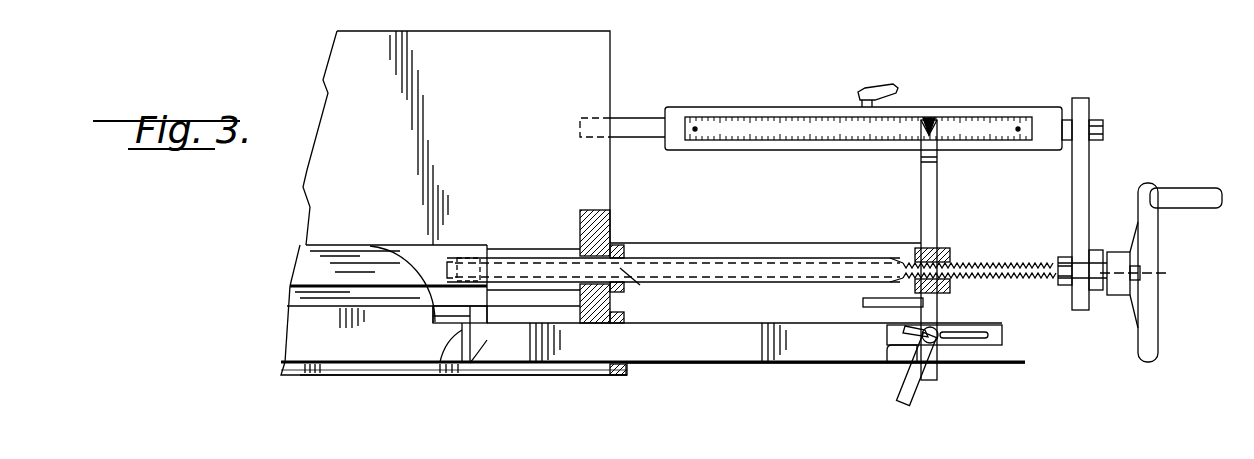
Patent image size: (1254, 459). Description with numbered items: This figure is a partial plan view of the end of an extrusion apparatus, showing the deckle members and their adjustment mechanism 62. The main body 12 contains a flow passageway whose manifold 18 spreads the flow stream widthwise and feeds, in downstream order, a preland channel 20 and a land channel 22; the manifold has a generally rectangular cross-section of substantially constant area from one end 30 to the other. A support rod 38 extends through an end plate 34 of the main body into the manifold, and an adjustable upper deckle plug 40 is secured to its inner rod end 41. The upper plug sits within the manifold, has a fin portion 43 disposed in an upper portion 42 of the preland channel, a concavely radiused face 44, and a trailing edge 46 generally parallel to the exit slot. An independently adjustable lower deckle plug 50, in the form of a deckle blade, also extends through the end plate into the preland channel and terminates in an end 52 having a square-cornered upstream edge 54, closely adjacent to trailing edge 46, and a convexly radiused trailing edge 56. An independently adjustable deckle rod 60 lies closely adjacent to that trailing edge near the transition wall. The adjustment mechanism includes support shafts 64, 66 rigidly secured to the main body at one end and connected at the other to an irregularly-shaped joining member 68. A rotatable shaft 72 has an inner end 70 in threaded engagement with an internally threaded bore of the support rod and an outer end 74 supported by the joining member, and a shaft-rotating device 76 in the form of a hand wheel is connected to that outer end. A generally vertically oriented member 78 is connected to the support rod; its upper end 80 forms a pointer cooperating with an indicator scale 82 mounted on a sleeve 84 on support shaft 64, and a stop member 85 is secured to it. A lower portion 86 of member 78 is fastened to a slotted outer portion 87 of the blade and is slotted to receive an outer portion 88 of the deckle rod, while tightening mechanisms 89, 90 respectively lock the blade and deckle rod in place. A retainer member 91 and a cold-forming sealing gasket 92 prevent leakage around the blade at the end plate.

The main body 12 is at (620, 48).
The manifold 18 is at (300, 258).
The preland channel 20 is at (290, 320).
The land channel 22 is at (290, 373).
The manifold end 30 is at (568, 308).
The end plate 34 is at (592, 210).
The support rod 38 is at (525, 258).
The upper deckle plug 40 is at (411, 244).
The inner rod end 41 is at (465, 257).
The upper portion of preland channel 42 is at (525, 308).
The fin portion 43 is at (430, 314).
The concavely radiused face 44 is at (405, 277).
The trailing edge 46 is at (437, 322).
The lower deckle plug 50 is at (530, 368).
The blade end 52 is at (445, 365).
The upstream edge 54 is at (472, 320).
The trailing edge 56 is at (478, 372).
The deckle rod 60 is at (697, 365).
The adjustment mechanism 62 is at (1156, 241).
The support shaft 64 is at (628, 128).
The support shaft 66 is at (790, 243).
The joining member 68 is at (1072, 171).
The inner end of rotatable shaft 70 is at (640, 285).
The rotatable shaft 72 is at (1000, 262).
The outer end of rotatable shaft 74 is at (1103, 293).
The shaft-rotating device 76 is at (1158, 316).
The vertically oriented member 78 is at (915, 186).
The upper end 80 is at (929, 117).
The indicator scale 82 is at (755, 117).
The sleeve 84 is at (817, 107).
The stop member 85 is at (862, 302).
The lower portion 86 is at (938, 313).
The outer portion of blade 87 is at (822, 364).
The outer portion of deckle rod 88 is at (948, 365).
The tightening mechanism 89 is at (893, 370).
The tightening mechanism 90 is at (905, 398).
The retainer member 91 is at (622, 368).
The sealing gasket 92 is at (608, 376).